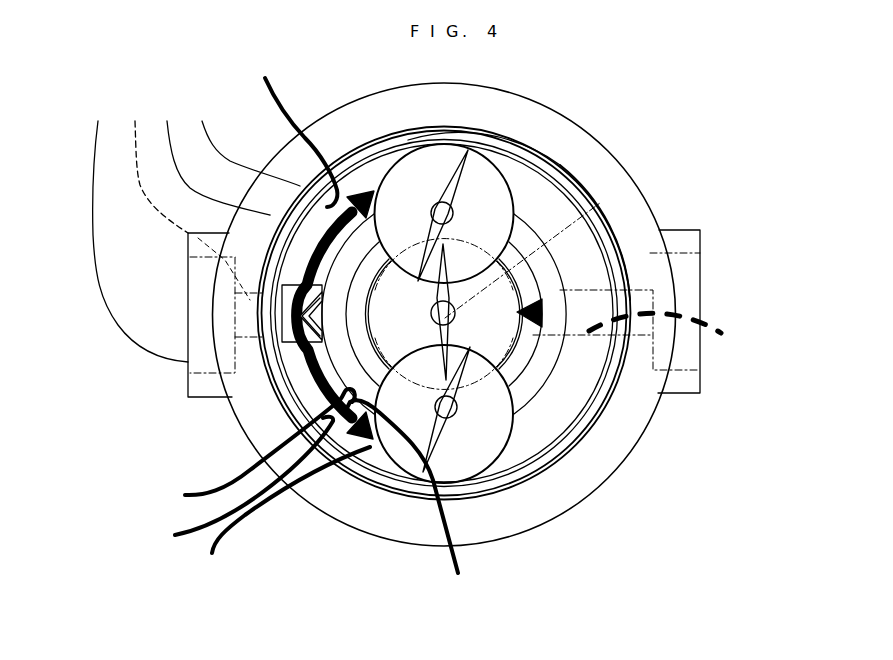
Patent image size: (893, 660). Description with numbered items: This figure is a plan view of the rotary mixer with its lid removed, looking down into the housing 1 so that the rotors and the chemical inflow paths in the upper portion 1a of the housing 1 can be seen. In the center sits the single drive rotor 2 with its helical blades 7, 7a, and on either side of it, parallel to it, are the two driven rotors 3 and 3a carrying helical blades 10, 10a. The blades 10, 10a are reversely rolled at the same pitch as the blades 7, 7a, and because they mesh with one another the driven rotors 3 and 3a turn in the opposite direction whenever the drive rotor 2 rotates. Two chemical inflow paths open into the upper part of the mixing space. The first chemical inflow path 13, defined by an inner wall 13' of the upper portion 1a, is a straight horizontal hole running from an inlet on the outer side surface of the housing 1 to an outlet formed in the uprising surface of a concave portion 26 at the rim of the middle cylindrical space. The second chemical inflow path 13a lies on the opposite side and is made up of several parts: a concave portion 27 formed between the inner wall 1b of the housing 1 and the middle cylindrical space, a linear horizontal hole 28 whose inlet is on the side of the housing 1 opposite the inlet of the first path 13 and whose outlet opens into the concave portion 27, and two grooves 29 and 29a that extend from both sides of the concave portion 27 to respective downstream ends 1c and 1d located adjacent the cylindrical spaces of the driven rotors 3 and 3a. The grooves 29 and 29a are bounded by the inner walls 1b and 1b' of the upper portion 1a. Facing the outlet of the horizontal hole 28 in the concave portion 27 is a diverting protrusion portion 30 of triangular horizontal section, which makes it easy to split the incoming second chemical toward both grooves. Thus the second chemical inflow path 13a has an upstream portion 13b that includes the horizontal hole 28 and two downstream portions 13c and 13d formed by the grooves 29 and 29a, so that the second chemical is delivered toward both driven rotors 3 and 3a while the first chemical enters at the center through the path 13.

The housing 1 is at (608, 112).
The upper portion of the housing 1a is at (246, 453).
The inner wall of the housing 1b is at (237, 303).
The inner wall of the housing 1b' is at (413, 505).
The downstream end 1c is at (375, 170).
The downstream end 1d is at (277, 520).
The drive rotor 2 is at (560, 247).
The driven rotor 3 is at (507, 437).
The driven rotor 3a is at (517, 155).
The helical blade 7 is at (385, 155).
The helical blade 7a is at (530, 398).
The helical blade 10 is at (547, 152).
The helical blade 10a is at (415, 152).
The first chemical inflow path 13 is at (627, 232).
The inner wall 13' is at (681, 339).
The second chemical inflow path 13a is at (218, 97).
The upstream portion 13b is at (251, 356).
The downstream portion 13c is at (313, 375).
The downstream portion 13d is at (328, 215).
The concave portion 26 is at (662, 388).
The concave portion 27 is at (213, 159).
The linear horizontal hole 28 is at (156, 168).
The groove 29 is at (140, 232).
The groove 29a is at (243, 144).
The diverting protrusion portion 30 is at (330, 382).